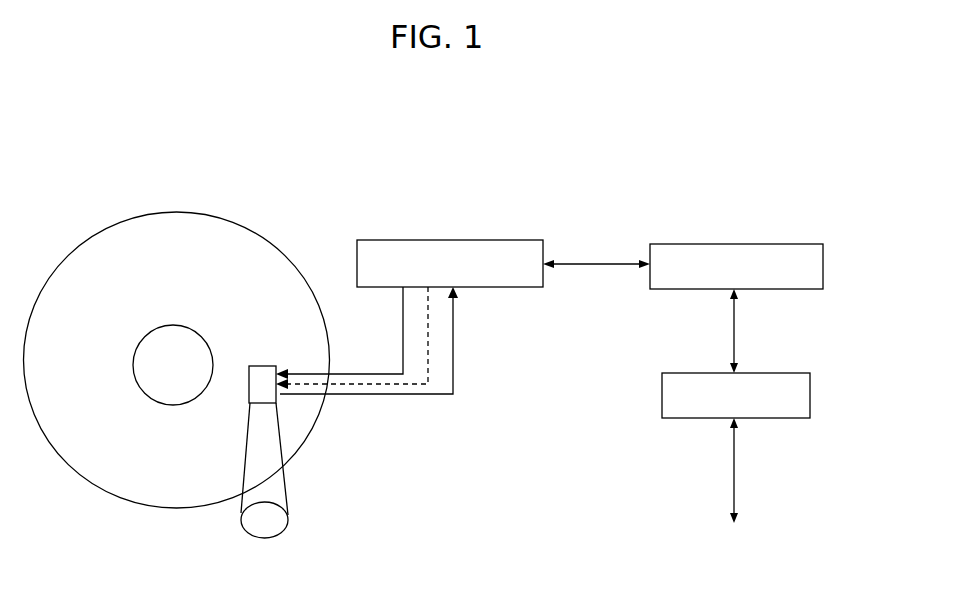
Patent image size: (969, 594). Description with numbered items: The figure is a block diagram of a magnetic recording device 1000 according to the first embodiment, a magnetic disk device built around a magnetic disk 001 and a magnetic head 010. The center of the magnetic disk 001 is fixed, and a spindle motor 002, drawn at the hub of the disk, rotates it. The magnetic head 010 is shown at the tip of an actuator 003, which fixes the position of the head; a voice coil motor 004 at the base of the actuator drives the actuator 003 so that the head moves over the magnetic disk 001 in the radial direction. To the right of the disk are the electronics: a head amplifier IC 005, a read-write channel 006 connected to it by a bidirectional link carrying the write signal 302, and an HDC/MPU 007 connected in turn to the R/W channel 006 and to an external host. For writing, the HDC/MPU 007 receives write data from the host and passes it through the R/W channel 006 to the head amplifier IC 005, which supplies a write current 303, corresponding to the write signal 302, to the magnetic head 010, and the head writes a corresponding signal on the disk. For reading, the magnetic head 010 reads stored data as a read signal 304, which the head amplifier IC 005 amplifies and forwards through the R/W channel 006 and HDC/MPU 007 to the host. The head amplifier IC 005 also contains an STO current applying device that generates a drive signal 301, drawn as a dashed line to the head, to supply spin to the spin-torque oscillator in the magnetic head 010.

The magnetic recording device 1000 is at (642, 152).
The magnetic disk 001 is at (185, 212).
The spindle motor 002 is at (178, 334).
The magnetic head 010 is at (269, 366).
The actuator 003 is at (275, 445).
The voice coil motor 004 is at (275, 537).
The head amplifier IC 005 is at (430, 241).
The read-write channel 006 is at (780, 244).
The HDC/MPU 007 is at (775, 373).
The write signal 302 is at (596, 254).
The write current 303 is at (340, 373).
The drive signal 301 is at (358, 388).
The read signal 304 is at (428, 396).